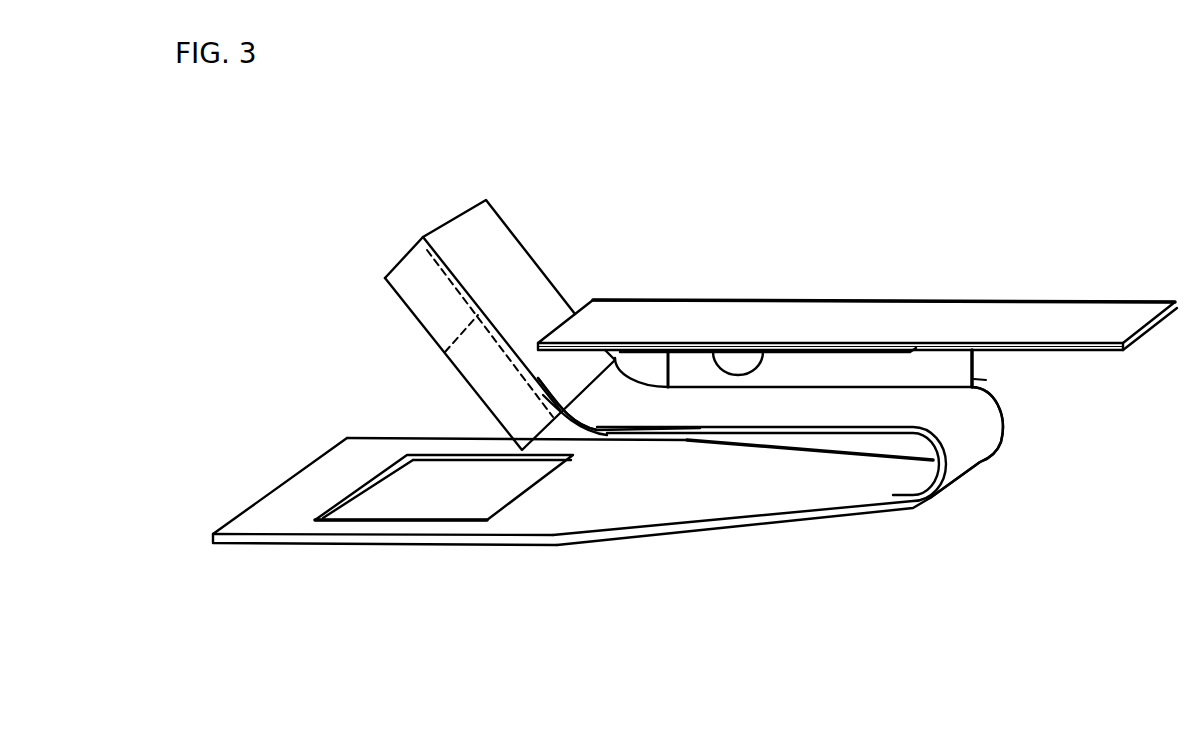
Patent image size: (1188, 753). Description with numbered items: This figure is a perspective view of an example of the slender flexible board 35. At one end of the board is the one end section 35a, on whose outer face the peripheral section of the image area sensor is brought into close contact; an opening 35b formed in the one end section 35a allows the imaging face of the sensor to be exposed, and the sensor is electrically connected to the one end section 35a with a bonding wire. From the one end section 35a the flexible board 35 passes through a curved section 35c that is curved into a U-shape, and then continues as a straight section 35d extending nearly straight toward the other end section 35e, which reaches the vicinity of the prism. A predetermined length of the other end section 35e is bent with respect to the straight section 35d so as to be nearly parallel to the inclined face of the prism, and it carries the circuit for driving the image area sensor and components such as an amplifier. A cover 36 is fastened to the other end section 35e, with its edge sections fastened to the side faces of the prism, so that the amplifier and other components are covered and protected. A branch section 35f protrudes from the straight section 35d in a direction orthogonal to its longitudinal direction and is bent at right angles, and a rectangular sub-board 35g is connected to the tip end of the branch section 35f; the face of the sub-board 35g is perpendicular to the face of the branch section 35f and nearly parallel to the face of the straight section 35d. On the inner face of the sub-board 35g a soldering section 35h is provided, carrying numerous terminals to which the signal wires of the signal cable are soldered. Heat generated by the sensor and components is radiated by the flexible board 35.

The flexible board 35 is at (668, 364).
The one end section 35a is at (380, 546).
The opening 35b is at (507, 502).
The curved section 35c is at (975, 448).
The straight section 35d is at (770, 407).
The other end section 35e is at (445, 354).
The branch section 35f is at (945, 367).
The sub-board 35g is at (1057, 318).
The soldering section 35h is at (712, 350).
The cover 36 is at (476, 291).